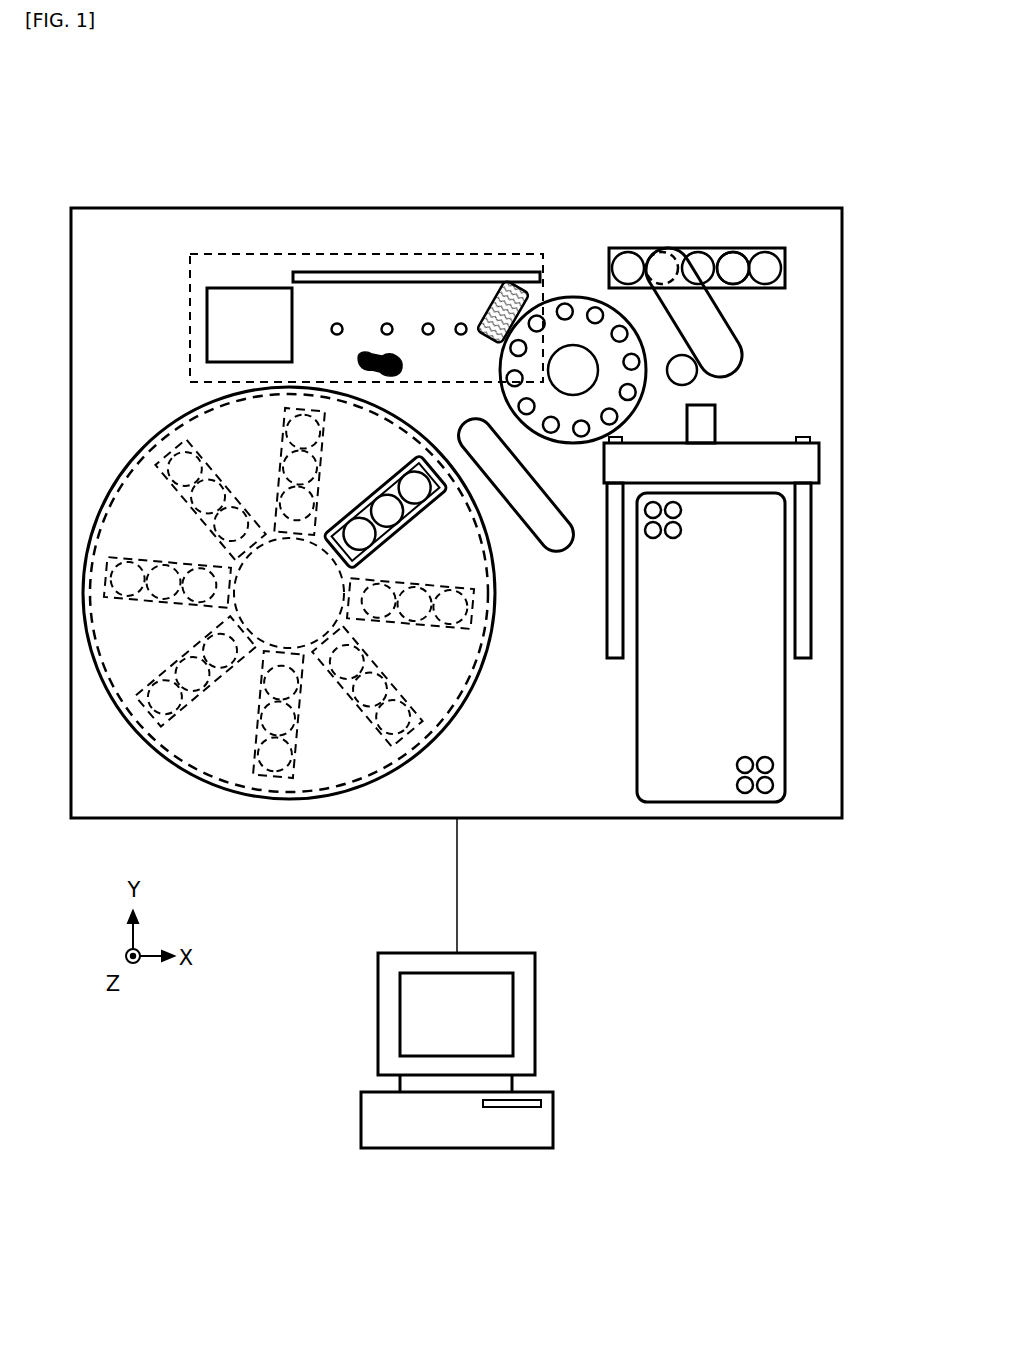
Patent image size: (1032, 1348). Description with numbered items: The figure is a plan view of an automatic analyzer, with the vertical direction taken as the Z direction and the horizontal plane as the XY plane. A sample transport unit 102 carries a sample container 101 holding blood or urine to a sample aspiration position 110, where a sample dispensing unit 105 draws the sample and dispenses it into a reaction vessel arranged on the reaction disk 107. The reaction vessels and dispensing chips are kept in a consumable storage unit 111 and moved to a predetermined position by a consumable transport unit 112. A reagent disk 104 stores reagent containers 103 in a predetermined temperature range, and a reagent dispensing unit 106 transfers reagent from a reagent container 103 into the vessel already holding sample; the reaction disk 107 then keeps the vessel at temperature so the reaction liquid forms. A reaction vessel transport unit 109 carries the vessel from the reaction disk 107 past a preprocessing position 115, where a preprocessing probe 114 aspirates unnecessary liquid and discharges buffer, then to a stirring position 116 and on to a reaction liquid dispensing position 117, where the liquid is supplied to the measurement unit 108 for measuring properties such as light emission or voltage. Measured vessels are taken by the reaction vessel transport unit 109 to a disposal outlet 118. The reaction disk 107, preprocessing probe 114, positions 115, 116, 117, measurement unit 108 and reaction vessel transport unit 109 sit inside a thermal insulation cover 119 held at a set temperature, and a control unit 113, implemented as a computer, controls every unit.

The sample container 101 is at (698, 250).
The sample transport unit 102 is at (750, 250).
The reagent container 103 is at (180, 490).
The reagent disk 104 is at (289, 651).
The sample dispensing unit 105 is at (705, 327).
The reagent dispensing unit 106 is at (543, 532).
The reaction disk 107 is at (573, 297).
The measurement unit 108 is at (235, 300).
The reaction vessel transport unit 109 is at (507, 288).
The sample aspiration position 110 is at (660, 262).
The consumable storage unit 111 is at (722, 802).
The consumable transport unit 112 is at (800, 468).
The control unit 113 is at (537, 1013).
The preprocessing probe 114 is at (405, 365).
The preprocessing position 115 is at (384, 324).
The stirring position 116 is at (426, 324).
The reaction liquid dispensing position 117 is at (334, 324).
The disposal outlet 118 is at (459, 324).
The thermal insulation cover 119 is at (190, 333).